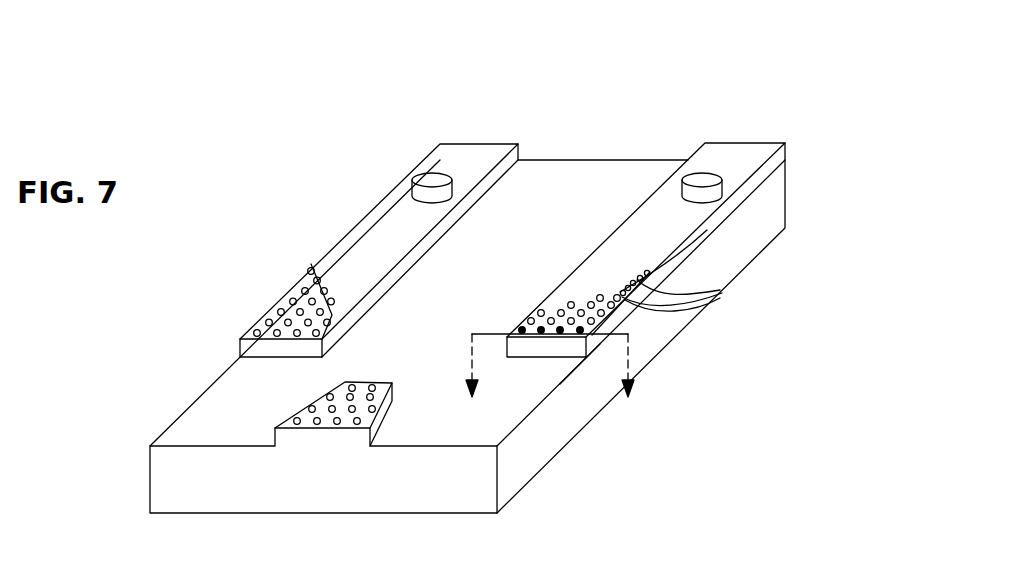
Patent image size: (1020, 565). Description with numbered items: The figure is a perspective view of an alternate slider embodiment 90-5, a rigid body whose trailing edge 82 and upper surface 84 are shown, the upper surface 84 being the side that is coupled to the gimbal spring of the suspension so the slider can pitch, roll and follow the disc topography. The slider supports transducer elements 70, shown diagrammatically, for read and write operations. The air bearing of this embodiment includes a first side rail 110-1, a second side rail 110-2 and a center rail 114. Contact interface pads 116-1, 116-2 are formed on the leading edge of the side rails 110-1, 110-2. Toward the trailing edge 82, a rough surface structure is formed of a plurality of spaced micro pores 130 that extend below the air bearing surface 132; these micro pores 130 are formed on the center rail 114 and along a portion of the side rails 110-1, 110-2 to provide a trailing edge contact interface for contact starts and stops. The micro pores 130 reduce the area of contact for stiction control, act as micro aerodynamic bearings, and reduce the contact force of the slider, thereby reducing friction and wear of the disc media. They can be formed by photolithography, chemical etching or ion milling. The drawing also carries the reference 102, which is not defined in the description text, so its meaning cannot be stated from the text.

The transducer elements 70 is at (328, 420).
The trailing edge 82 is at (622, 160).
The upper surface 84 is at (657, 357).
The slider embodiment 90-5 is at (562, 147).
The contact pads 102 is at (347, 385).
The side rail 110-1 is at (273, 305).
The side rail 110-2 is at (757, 152).
The center rail 114 is at (375, 418).
The contact interface pad 116-1 is at (427, 178).
The contact interface pad 116-2 is at (702, 178).
The micro pores 130 is at (722, 296).
The air bearing surface 132 is at (588, 303).